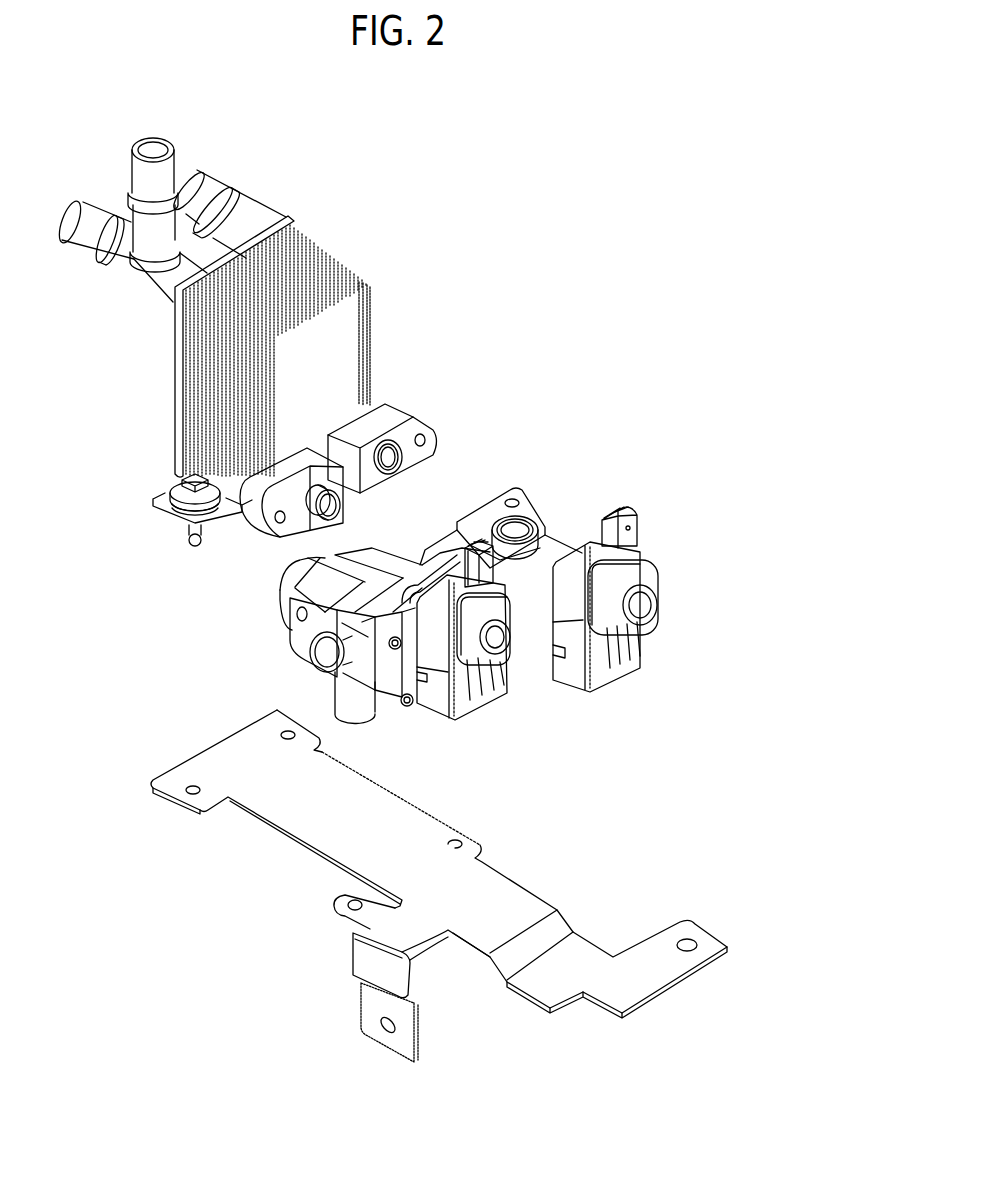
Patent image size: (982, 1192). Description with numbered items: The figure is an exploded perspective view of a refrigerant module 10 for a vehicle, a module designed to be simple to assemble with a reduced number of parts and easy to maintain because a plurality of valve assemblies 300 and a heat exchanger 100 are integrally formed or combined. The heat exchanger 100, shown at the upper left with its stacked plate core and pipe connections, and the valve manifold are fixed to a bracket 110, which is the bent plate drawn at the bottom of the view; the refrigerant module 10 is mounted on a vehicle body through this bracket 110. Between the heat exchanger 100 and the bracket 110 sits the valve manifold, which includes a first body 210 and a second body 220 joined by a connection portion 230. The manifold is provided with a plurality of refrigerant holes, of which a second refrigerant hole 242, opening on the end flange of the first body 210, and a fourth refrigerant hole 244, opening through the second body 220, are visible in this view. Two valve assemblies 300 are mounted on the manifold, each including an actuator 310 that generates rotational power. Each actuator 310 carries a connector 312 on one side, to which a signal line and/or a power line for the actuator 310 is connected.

The refrigerant module 10 is at (590, 161).
The heat exchanger 100 is at (330, 250).
The bracket 110 is at (299, 822).
The first body 210 is at (283, 581).
The second body 220 is at (490, 508).
The connection portion 230 is at (423, 552).
The second refrigerant hole 242 is at (318, 657).
The fourth refrigerant hole 244 is at (528, 524).
The valve assembly 300 is at (676, 566).
The actuator 310 is at (564, 670).
The connector 312 is at (640, 524).